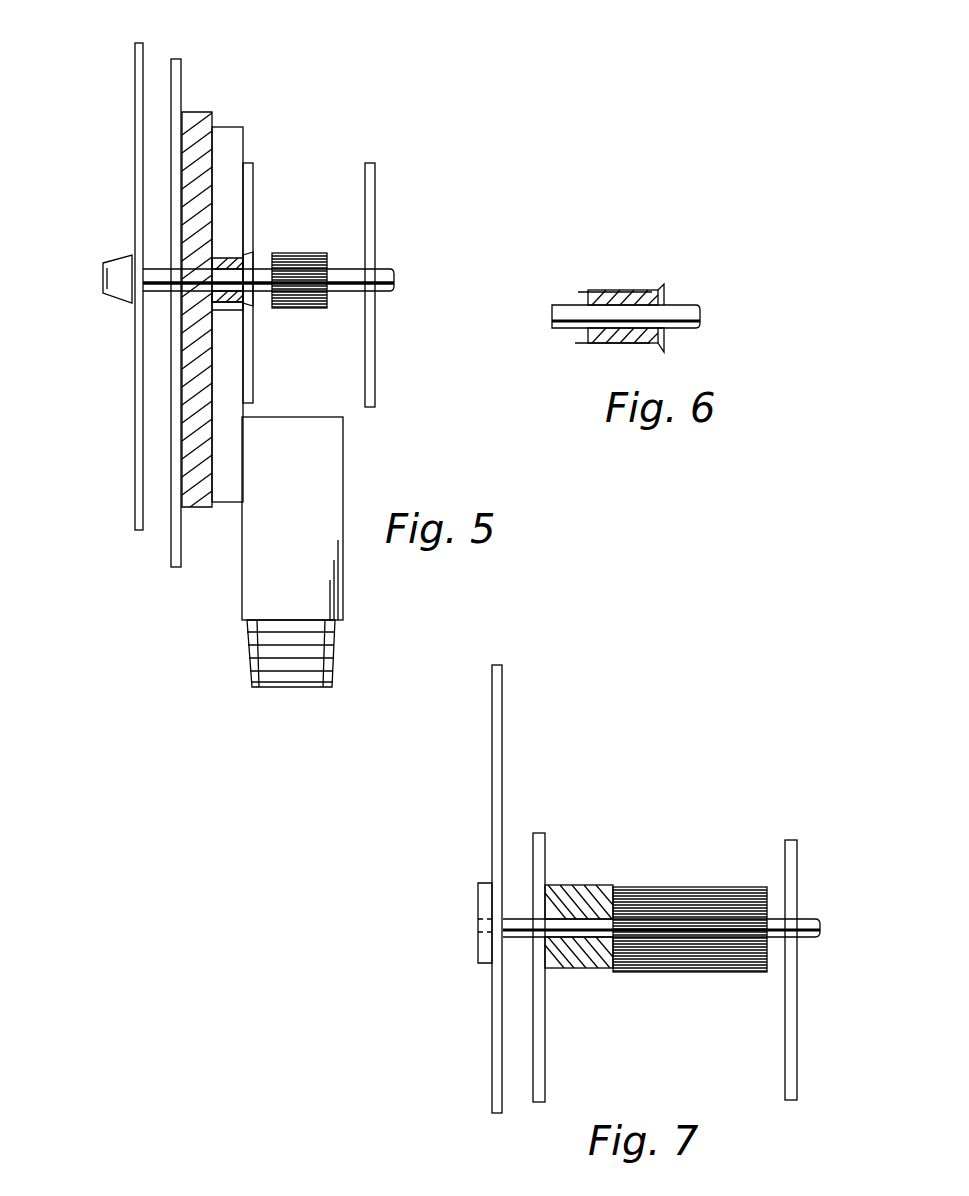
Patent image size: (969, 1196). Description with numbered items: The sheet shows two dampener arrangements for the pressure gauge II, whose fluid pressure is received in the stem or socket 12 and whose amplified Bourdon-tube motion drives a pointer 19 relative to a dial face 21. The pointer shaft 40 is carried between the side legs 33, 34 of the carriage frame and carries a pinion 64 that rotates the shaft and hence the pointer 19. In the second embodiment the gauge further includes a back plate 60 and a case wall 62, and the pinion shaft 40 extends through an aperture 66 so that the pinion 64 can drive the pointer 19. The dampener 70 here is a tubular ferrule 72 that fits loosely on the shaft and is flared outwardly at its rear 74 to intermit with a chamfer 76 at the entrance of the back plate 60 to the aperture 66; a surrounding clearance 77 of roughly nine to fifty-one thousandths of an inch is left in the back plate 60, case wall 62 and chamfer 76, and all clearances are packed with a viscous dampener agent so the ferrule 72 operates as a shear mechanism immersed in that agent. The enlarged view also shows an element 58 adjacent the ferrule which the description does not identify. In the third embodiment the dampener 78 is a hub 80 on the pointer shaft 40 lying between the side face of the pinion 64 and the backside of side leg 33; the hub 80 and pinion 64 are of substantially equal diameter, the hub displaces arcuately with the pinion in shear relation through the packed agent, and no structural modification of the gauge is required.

In FIG. 5, the pressure gauge II is at (78, 281).
In FIG. 7, the pressure gauge II is at (450, 912).
In FIG. 5, the stem or socket 12 is at (335, 472).
In FIG. 5, the pointer 19 is at (135, 91).
In FIG. 7, the pointer 19 is at (492, 700).
In FIG. 5, the dial face 21 is at (173, 70).
In FIG. 5, the side leg 33 is at (253, 190).
In FIG. 7, the side leg 33 is at (545, 1074).
In FIG. 5, the side leg 34 is at (375, 178).
In FIG. 7, the side leg 34 is at (797, 865).
In FIG. 5, the pinion shaft 40 is at (386, 270).
In FIG. 6, the pinion shaft 40 is at (570, 305).
In FIG. 7, the pinion shaft 40 is at (797, 919).
In FIG. 6, the bushing 58 is at (620, 290).
In FIG. 7, the bushing 58 is at (548, 885).
In FIG. 5, the back plate 60 is at (243, 142).
In FIG. 5, the case wall 62 is at (205, 112).
In FIG. 5, the pinion 64 is at (300, 253).
In FIG. 7, the pinion 64 is at (693, 887).
In FIG. 5, the aperture 66 is at (168, 292).
In FIG. 7, the aperture 66 is at (485, 923).
In FIG. 5, the dampener 70 is at (228, 250).
In FIG. 6, the dampener 70 is at (712, 322).
In FIG. 5, the tubular ferrule 72 is at (240, 262).
In FIG. 5, the flared rear 74 is at (245, 264).
In FIG. 6, the flared rear 74 is at (658, 290).
In FIG. 5, the chamfer 76 is at (232, 305).
In FIG. 6, the surrounding clearance 77 is at (600, 290).
In FIG. 7, the dampener 78 is at (582, 882).
In FIG. 7, the hub 80 is at (598, 900).